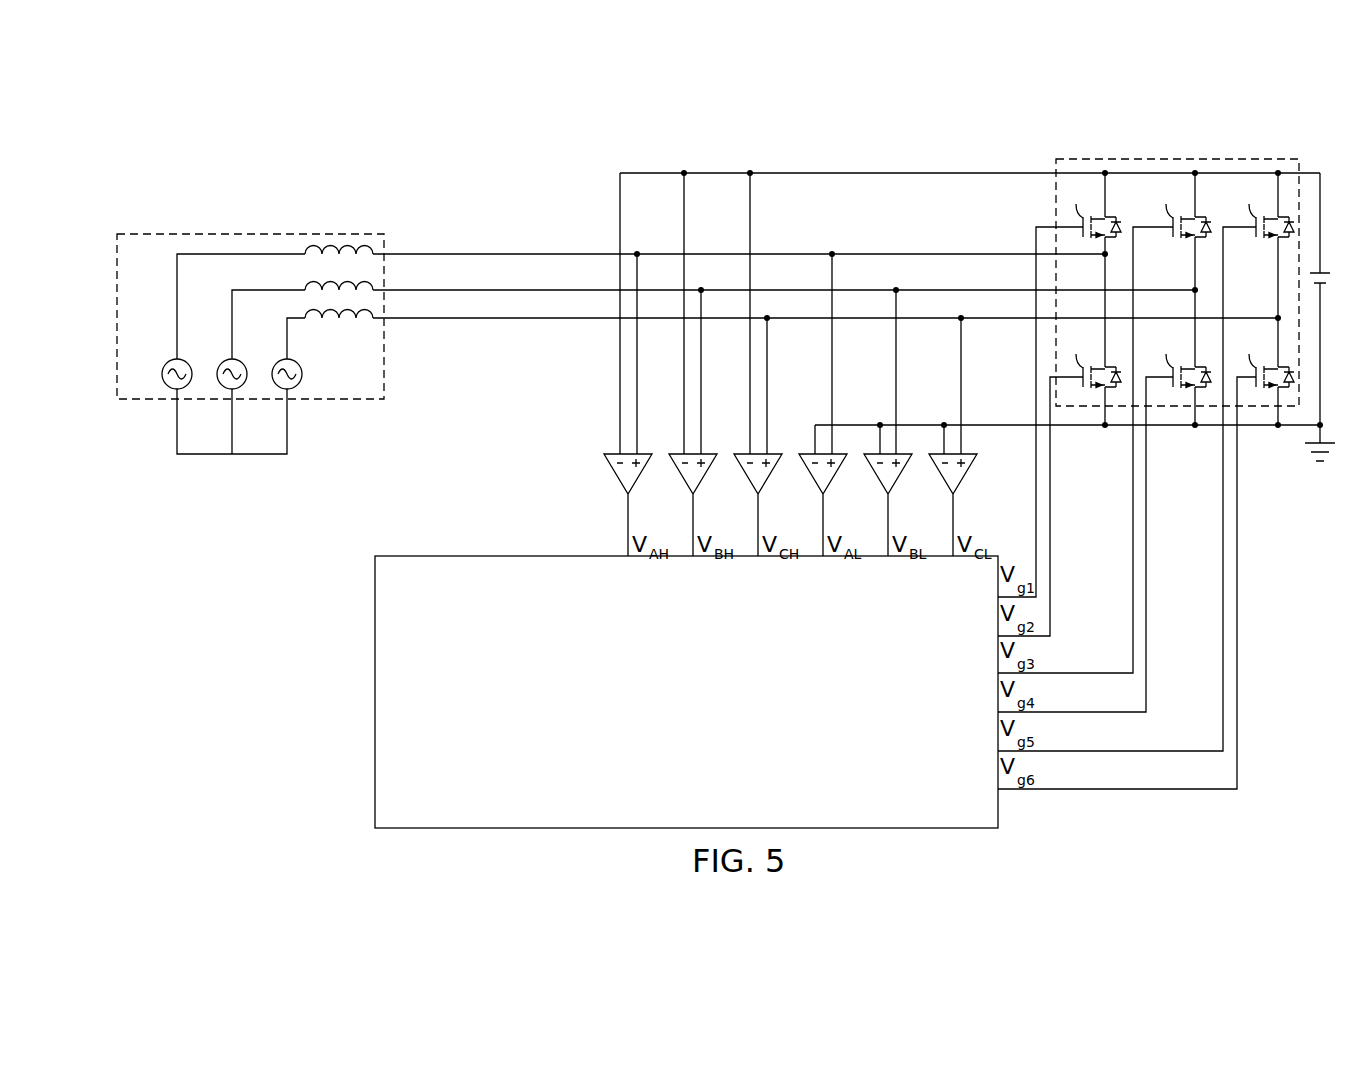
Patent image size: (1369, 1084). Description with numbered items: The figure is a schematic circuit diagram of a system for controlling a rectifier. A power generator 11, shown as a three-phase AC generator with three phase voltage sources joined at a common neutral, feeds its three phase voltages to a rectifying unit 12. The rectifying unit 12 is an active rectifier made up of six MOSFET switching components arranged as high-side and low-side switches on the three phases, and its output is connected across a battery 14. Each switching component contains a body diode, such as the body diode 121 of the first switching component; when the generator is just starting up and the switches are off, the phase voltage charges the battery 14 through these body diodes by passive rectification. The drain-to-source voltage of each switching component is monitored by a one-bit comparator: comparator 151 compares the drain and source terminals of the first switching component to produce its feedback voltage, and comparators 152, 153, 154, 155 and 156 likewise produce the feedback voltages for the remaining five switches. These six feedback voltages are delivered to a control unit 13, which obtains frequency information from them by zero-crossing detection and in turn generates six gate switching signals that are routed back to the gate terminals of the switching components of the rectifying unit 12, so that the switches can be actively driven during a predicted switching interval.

The power generator 11 is at (181, 234).
The rectifying unit 12 is at (1186, 276).
The body diode 121 is at (1121, 221).
The control unit 13 is at (375, 691).
The battery 14 is at (1322, 273).
The comparator 151 is at (622, 489).
The comparator 152 is at (687, 489).
The comparator 153 is at (752, 489).
The comparator 154 is at (817, 489).
The comparator 155 is at (882, 489).
The comparator 156 is at (947, 489).